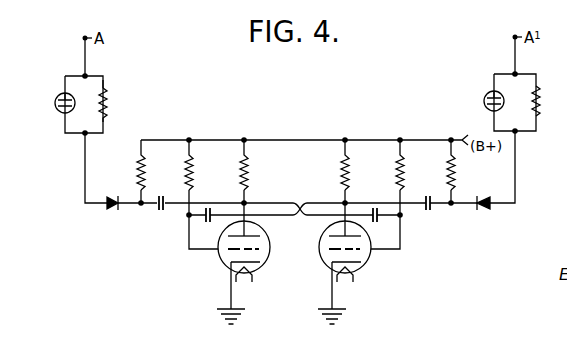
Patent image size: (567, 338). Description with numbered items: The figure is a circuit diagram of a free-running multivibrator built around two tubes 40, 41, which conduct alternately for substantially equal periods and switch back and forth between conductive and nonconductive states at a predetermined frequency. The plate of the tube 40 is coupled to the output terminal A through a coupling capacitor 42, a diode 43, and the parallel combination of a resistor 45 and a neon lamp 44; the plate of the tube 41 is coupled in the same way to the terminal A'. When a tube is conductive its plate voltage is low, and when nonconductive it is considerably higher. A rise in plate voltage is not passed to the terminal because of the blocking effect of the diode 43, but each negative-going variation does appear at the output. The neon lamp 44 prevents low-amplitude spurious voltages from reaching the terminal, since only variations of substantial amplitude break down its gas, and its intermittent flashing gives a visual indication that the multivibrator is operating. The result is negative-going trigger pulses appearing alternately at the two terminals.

The multivibrator tube 40 is at (263, 264).
The multivibrator tube 41 is at (365, 258).
The coupling capacitor 42 is at (163, 212).
The diode 43 is at (109, 207).
The neon lamp 44 is at (58, 112).
The resistor 45 is at (109, 104).